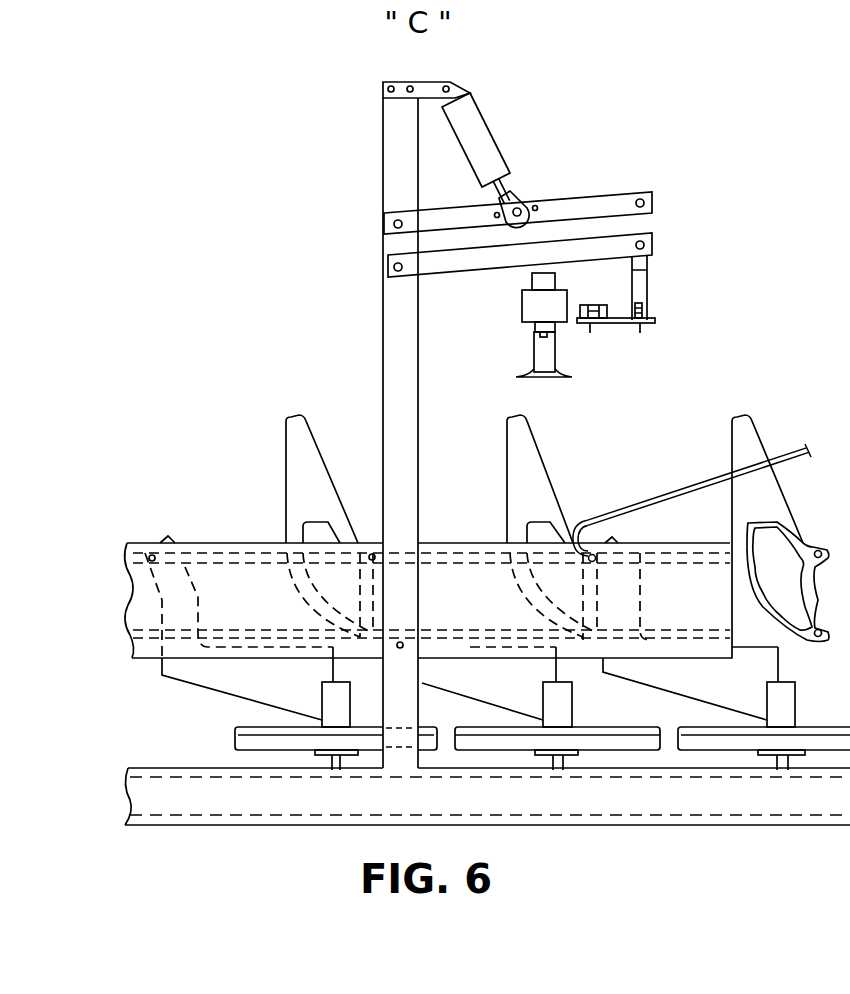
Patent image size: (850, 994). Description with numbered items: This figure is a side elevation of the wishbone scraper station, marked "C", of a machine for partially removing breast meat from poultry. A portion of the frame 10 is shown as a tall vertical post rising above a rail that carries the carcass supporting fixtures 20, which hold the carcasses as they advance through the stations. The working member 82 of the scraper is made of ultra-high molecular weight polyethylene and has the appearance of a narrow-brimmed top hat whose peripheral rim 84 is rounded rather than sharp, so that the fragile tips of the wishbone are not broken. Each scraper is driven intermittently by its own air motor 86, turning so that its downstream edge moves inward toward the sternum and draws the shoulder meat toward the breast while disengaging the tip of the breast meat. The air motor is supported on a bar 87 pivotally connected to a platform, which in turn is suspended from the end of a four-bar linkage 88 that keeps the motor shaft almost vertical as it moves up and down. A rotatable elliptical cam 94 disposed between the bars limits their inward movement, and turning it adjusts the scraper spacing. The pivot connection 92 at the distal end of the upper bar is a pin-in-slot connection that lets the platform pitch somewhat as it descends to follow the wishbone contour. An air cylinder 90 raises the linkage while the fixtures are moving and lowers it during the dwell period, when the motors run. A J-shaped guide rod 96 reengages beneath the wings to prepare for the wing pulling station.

The frame 10 is at (394, 377).
The carcass supporting fixture 20 is at (297, 459).
The working member 82 is at (550, 365).
The peripheral rim 84 is at (570, 376).
The air motor 86 is at (533, 307).
The bar 87 is at (655, 323).
The four-bar linkage 88 is at (430, 213).
The air cylinder 90 is at (488, 120).
The pivot connection 92 is at (637, 192).
The elliptical cam 94 is at (603, 307).
The guide rod 96 is at (667, 492).